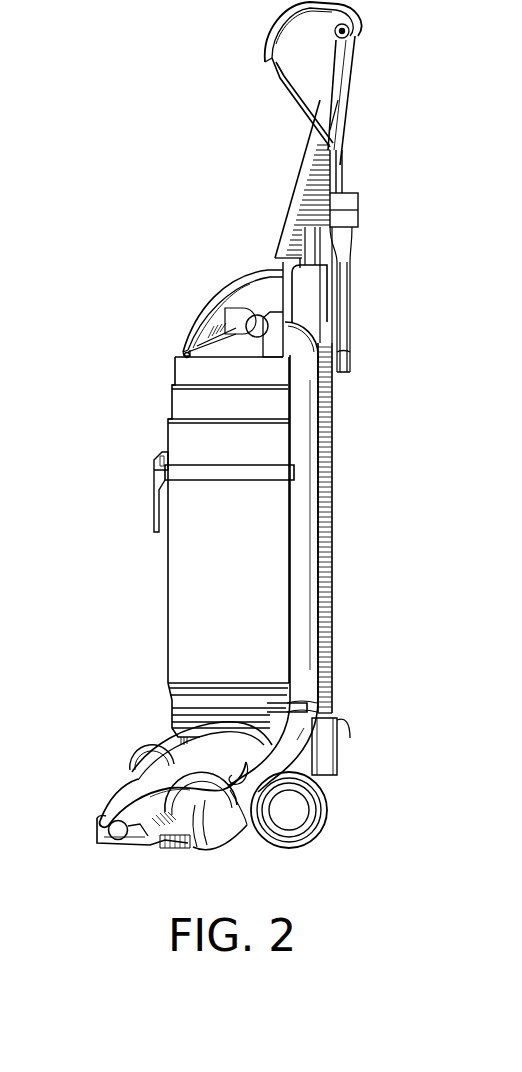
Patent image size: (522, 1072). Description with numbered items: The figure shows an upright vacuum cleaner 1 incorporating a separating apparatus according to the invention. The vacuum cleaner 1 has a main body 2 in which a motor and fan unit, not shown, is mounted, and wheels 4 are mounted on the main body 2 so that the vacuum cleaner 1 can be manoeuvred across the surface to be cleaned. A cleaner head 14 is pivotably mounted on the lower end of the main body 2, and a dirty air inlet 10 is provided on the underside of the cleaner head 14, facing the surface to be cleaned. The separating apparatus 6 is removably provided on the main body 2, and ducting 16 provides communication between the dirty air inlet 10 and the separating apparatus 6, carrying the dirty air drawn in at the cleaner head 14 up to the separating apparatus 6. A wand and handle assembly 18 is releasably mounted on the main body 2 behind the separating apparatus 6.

The vacuum cleaner 1 is at (133, 469).
The main body 2 is at (302, 308).
The wheels 4 is at (328, 822).
The separating apparatus 6 is at (190, 573).
The dirty air inlet 10 is at (110, 843).
The cleaner head 14 is at (133, 782).
The ducting 16 is at (296, 568).
The wand and handle assembly 18 is at (338, 76).